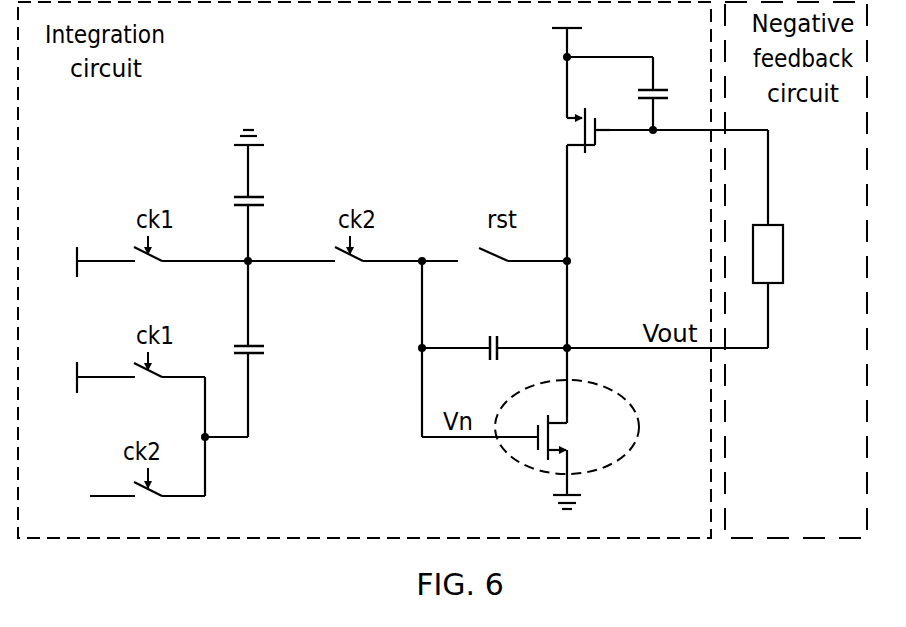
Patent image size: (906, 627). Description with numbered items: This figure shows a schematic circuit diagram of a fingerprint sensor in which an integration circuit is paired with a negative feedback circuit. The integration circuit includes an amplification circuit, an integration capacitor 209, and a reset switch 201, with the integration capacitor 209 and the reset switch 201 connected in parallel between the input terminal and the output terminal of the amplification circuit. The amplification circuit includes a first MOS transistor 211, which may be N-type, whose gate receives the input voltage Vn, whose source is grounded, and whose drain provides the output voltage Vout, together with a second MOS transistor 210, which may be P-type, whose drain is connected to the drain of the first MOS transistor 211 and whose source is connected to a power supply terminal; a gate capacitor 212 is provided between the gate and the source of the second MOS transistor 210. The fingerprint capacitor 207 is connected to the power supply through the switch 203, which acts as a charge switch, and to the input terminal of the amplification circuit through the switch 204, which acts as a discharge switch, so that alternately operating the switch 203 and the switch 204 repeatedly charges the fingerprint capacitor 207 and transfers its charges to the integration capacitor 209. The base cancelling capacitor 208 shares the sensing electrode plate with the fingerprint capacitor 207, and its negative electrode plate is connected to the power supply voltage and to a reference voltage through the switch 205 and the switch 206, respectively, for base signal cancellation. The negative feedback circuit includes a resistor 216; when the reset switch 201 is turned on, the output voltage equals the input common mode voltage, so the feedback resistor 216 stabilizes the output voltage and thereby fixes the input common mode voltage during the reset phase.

The reset switch 201 is at (501, 273).
The switch 203 is at (156, 280).
The switch 204 is at (357, 273).
The switch 205 is at (156, 385).
The switch 206 is at (156, 502).
The fingerprint capacitor 207 is at (272, 197).
The base cancelling capacitor 208 is at (272, 349).
The integration capacitor 209 is at (498, 342).
The second MOS transistor 210 is at (560, 130).
The first MOS transistor 211 is at (567, 427).
The gate capacitor 212 is at (668, 84).
The resistor 216 is at (796, 254).